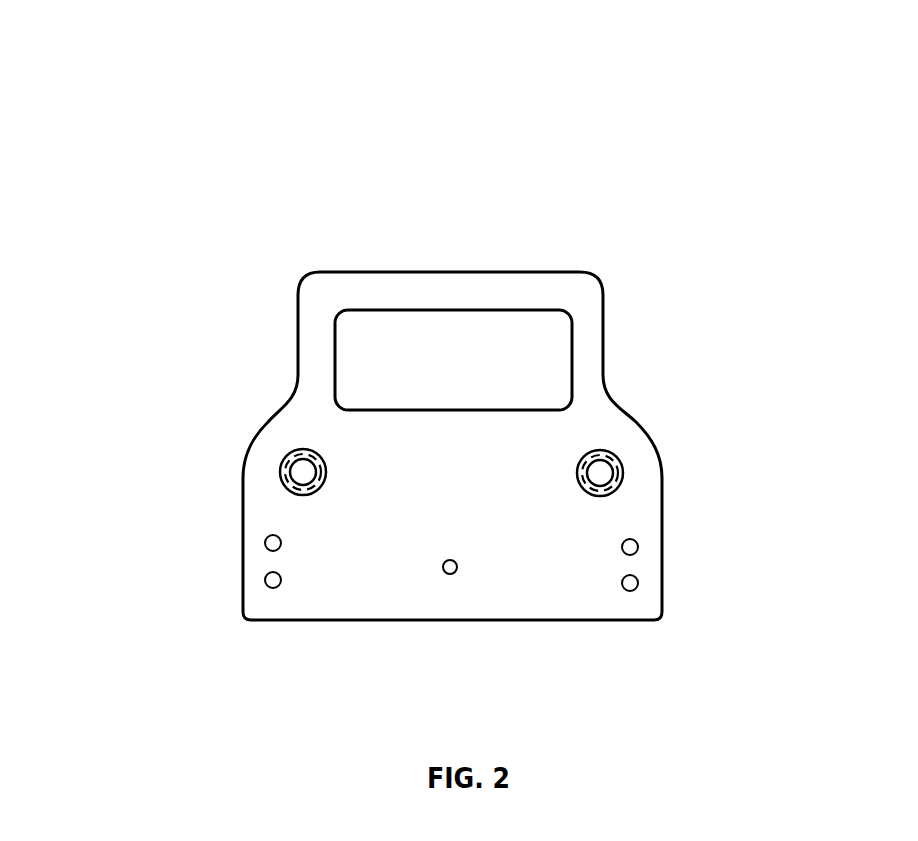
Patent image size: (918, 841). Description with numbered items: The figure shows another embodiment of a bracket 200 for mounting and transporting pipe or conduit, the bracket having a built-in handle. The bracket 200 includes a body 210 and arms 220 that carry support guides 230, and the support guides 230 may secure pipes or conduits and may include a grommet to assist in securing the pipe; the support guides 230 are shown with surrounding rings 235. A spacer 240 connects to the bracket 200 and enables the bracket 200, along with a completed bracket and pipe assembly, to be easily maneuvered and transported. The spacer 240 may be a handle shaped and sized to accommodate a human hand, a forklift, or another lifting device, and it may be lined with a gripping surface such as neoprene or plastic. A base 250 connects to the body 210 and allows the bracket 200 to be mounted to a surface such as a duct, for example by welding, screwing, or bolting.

The bracket 200 is at (440, 148).
The body 210 is at (463, 478).
The arms 220 is at (318, 332).
The support guides 230 is at (289, 456).
The washer 235 is at (280, 477).
The spacer 240 is at (460, 329).
The base 250 is at (328, 596).